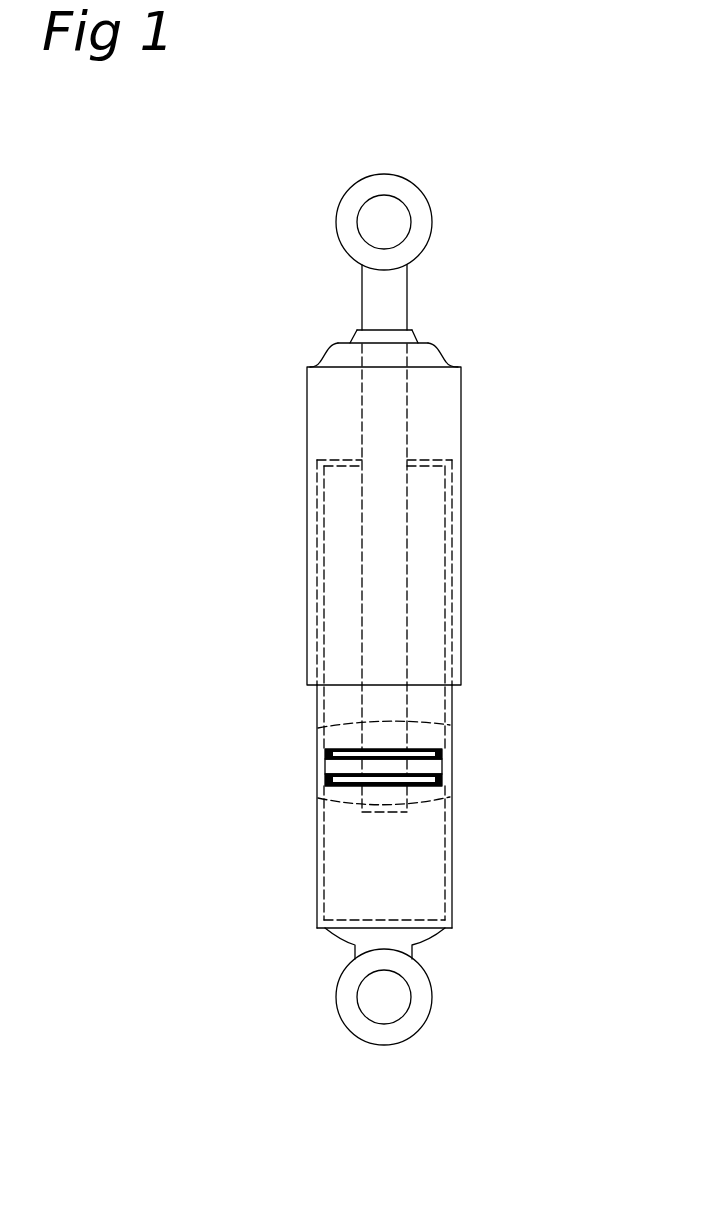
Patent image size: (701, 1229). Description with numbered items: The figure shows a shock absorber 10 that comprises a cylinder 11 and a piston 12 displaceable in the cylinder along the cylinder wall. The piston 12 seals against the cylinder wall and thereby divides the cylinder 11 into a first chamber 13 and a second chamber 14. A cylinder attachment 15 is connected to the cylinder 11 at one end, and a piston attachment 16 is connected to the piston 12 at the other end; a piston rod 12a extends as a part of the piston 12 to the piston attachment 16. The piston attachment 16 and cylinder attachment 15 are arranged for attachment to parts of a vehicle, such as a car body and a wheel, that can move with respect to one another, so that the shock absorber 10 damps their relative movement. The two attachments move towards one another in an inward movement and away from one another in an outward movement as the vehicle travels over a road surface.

The shock absorber 10 is at (480, 489).
The cylinder 11 is at (323, 748).
The piston 12 is at (335, 772).
The piston rod 12a is at (375, 432).
The first chamber 13 is at (413, 580).
The second chamber 14 is at (403, 849).
The cylinder attachment 15 is at (412, 1017).
The piston attachment 16 is at (417, 207).